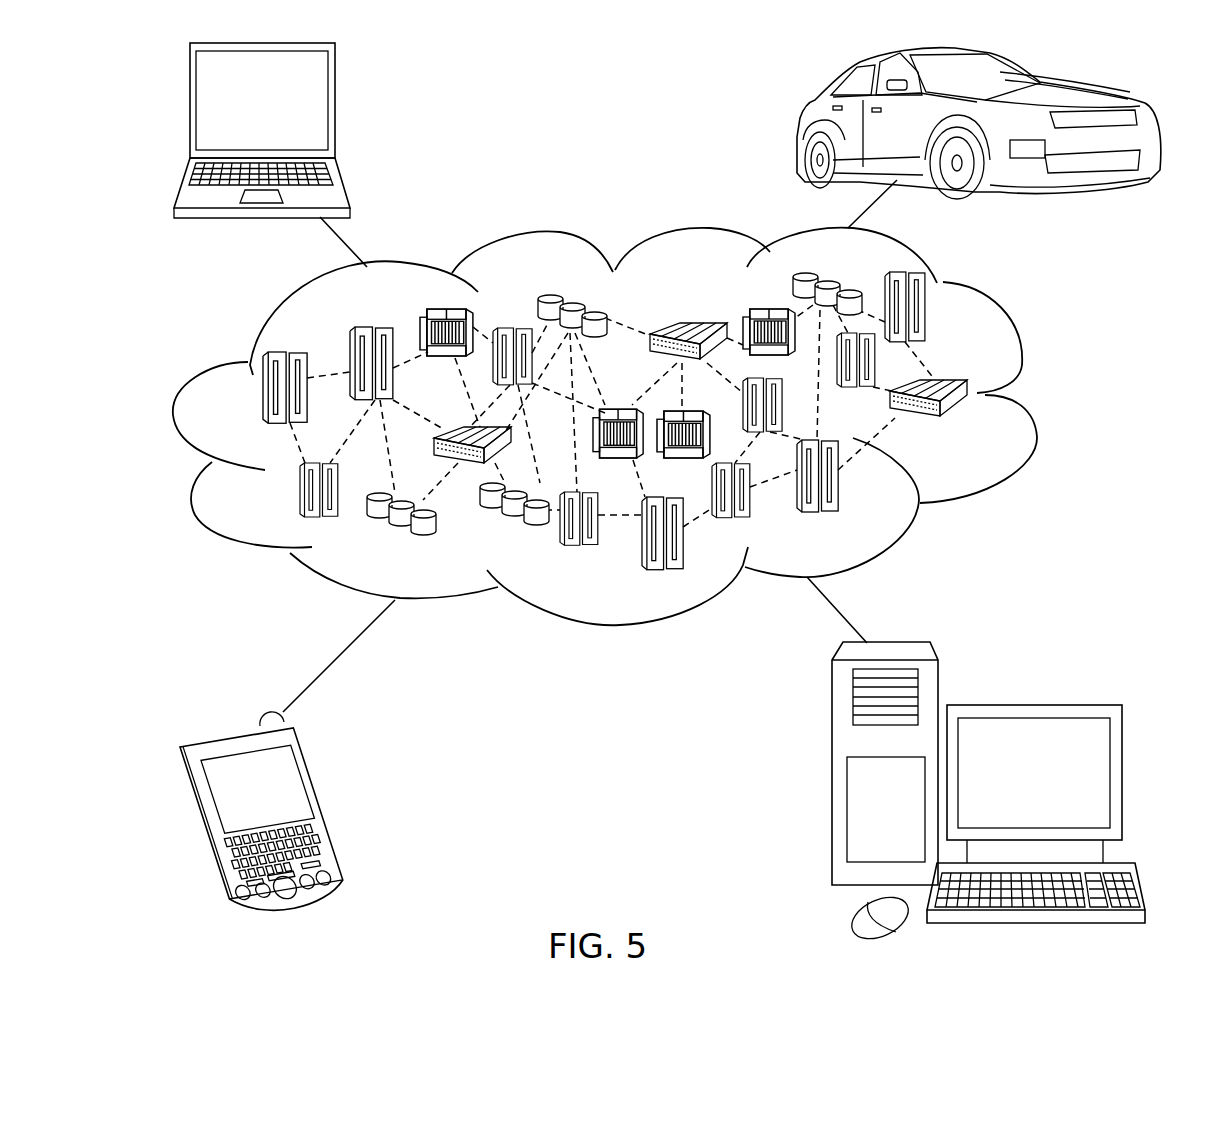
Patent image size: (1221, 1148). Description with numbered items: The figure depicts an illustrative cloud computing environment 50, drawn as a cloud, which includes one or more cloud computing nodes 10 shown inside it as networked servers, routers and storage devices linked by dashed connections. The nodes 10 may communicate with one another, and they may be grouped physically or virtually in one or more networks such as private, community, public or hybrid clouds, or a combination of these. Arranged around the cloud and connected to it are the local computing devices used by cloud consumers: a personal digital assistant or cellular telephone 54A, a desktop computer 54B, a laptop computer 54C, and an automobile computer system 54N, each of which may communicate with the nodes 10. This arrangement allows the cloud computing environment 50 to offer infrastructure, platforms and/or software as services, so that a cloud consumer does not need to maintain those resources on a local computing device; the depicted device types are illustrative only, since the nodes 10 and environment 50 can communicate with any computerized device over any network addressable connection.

The cloud computing nodes 10 is at (976, 433).
The cloud computing environment 50 is at (1032, 398).
The personal digital assistant or cellular telephone 54A is at (326, 805).
The desktop computer 54B is at (1030, 705).
The laptop computer 54C is at (335, 109).
The automobile computer system 54N is at (797, 124).